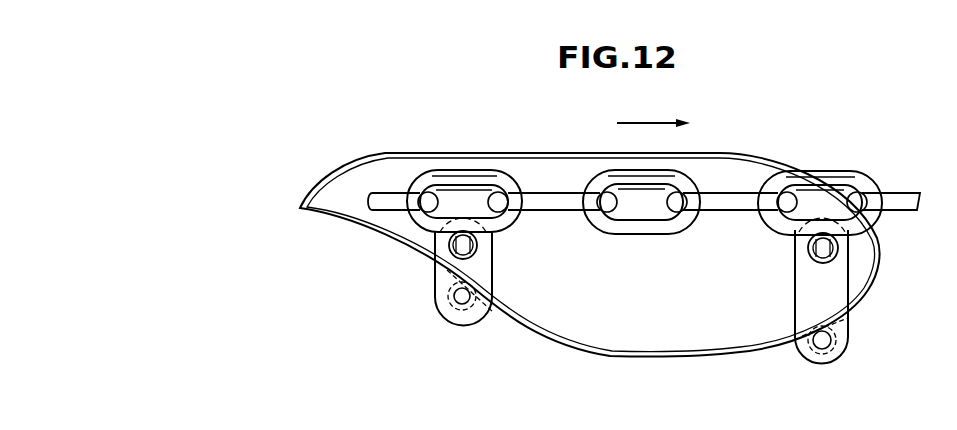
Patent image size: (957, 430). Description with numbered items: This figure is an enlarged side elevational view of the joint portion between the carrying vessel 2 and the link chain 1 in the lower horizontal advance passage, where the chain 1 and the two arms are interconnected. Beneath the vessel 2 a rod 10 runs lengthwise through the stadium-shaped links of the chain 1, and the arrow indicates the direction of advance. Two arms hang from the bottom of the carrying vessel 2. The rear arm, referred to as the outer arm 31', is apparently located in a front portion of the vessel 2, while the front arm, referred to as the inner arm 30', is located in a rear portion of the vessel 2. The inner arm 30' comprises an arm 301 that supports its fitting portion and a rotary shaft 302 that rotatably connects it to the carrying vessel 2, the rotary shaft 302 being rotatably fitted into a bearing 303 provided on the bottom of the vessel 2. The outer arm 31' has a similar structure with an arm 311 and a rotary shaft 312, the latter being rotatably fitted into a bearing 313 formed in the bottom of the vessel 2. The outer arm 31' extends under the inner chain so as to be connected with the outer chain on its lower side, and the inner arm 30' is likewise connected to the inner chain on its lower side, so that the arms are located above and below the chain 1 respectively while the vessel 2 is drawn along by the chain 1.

The link chain 1 is at (753, 190).
The carrying vessel 2 is at (740, 154).
The rod 10 is at (879, 188).
The inner arm 30' is at (419, 263).
The arm 301 is at (446, 284).
The rotary shaft 302 is at (458, 303).
The bearing 303 is at (486, 313).
The outer arm 31' is at (864, 277).
The arm 311 is at (849, 338).
The rotary shaft 312 is at (814, 344).
The bearing 313 is at (838, 354).